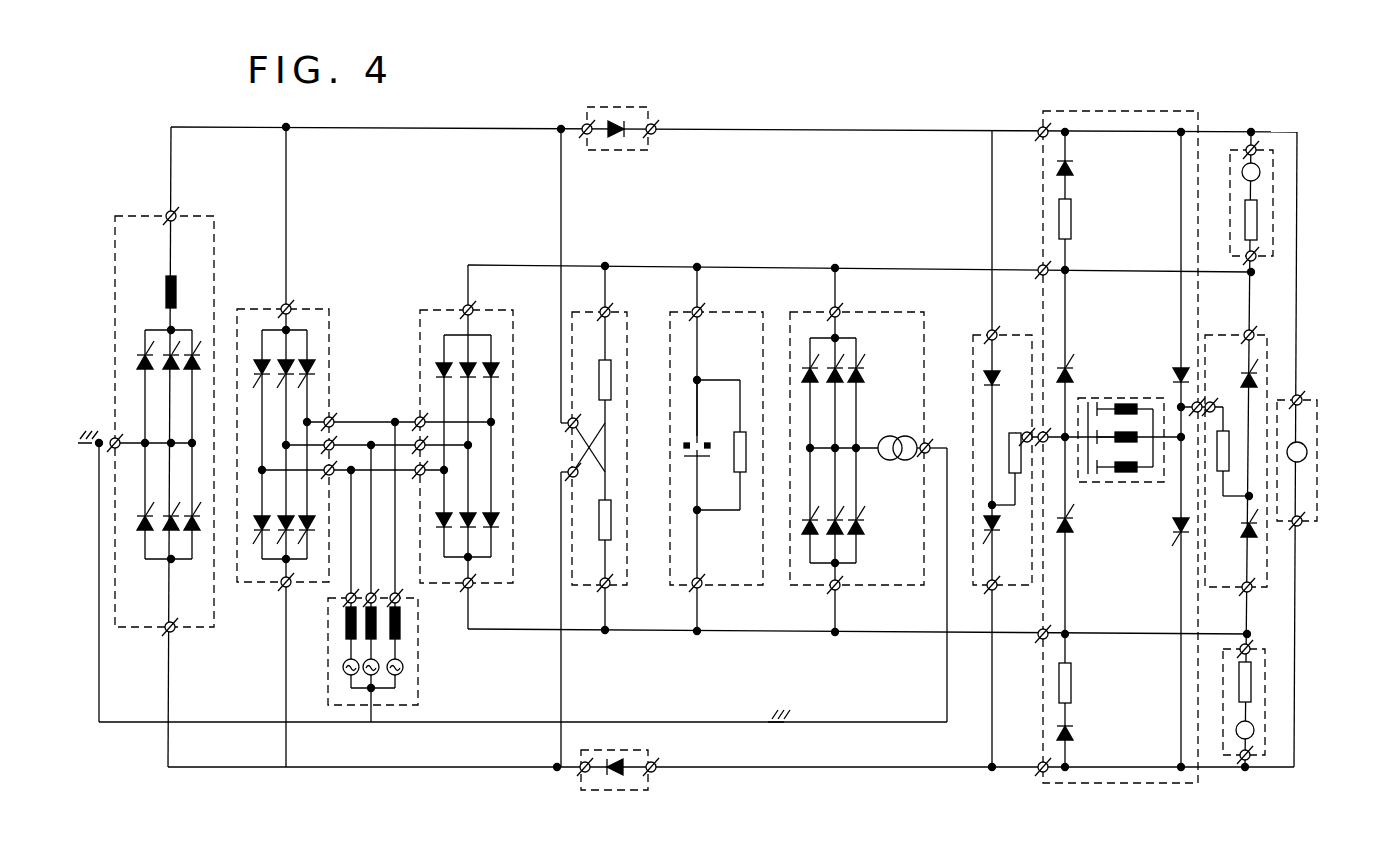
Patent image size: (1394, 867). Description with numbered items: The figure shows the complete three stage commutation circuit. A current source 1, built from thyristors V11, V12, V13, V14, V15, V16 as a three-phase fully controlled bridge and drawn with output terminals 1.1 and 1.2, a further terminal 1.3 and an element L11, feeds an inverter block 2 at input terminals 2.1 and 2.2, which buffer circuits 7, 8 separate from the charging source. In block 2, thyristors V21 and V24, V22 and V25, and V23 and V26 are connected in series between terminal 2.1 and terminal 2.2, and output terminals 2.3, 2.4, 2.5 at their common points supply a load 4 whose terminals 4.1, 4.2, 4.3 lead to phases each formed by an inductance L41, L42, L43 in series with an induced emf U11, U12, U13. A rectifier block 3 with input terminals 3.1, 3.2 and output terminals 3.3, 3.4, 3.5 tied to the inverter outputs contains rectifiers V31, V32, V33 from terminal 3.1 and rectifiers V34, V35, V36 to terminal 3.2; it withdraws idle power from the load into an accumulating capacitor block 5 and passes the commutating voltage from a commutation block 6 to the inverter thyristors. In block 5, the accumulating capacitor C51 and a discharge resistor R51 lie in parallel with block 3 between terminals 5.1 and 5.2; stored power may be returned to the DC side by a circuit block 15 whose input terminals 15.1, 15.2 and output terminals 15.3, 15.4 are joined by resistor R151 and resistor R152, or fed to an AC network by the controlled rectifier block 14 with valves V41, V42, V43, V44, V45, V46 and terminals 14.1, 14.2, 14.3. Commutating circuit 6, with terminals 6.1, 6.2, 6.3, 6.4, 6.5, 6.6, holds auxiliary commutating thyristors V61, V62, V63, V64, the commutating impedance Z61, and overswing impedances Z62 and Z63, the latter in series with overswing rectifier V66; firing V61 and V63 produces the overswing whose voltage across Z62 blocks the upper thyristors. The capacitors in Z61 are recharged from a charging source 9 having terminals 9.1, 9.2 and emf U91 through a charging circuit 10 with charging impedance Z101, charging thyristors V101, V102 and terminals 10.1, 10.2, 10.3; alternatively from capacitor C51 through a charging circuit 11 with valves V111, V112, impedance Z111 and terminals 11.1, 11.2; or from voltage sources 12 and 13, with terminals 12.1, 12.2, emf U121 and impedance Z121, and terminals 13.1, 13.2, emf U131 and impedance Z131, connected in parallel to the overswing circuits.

The thyristor bridge unit 1 is at (136, 245).
The terminal 1.1 is at (185, 225).
The terminal 1.2 is at (153, 634).
The terminal 1.3 is at (128, 454).
The inductor L11 is at (170, 279).
The thyristor V11 is at (138, 349).
The thyristor V12 is at (170, 374).
The thyristor V13 is at (190, 382).
The thyristor V14 is at (145, 565).
The thyristor V15 is at (170, 563).
The thyristor V16 is at (192, 560).
The thyristor bridge unit 2 is at (266, 308).
The terminal 2.1 is at (300, 301).
The terminal 2.2 is at (271, 579).
The terminal 2.3 is at (330, 444).
The terminal 2.4 is at (330, 420).
The terminal 2.5 is at (330, 468).
The thyristor V21 is at (256, 348).
The thyristor V22 is at (290, 350).
The thyristor V23 is at (314, 352).
The thyristor V24 is at (252, 548).
The thyristor V25 is at (290, 556).
The thyristor V26 is at (310, 557).
The diode bridge unit 3 is at (442, 308).
The terminal 3.1 is at (482, 301).
The terminal 3.2 is at (486, 580).
The terminal 3.3 is at (434, 439).
The terminal 3.4 is at (436, 429).
The terminal 3.5 is at (430, 458).
The diode V31 is at (442, 349).
The diode V32 is at (448, 358).
The diode V33 is at (497, 354).
The diode V34 is at (449, 503).
The diode V35 is at (471, 511).
The diode V36 is at (501, 513).
The three-phase source unit 4 is at (369, 583).
The terminal 4.1 is at (355, 596).
The terminal 4.2 is at (375, 596).
The terminal 4.3 is at (396, 596).
The inductor L41 is at (346, 638).
The inductor L42 is at (366, 640).
The inductor L43 is at (388, 645).
The AC voltage source U11 is at (346, 678).
The AC voltage source U12 is at (376, 676).
The AC voltage source U13 is at (402, 675).
The resistor unit 15 is at (604, 317).
The terminal 15.1 is at (623, 302).
The terminal 15.2 is at (623, 590).
The terminal 15.3 is at (586, 424).
The terminal 15.4 is at (582, 478).
The resistor R151 is at (615, 381).
The resistor R152 is at (595, 544).
The RC unit 5 is at (692, 317).
The terminal 5.1 is at (713, 302).
The terminal 5.2 is at (715, 580).
The capacitor C51 is at (704, 438).
The resistor R51 is at (736, 482).
The thyristor bridge unit 14 is at (810, 316).
The terminal 14.1 is at (854, 302).
The terminal 14.2 is at (853, 595).
The terminal with transformer 14.3 is at (882, 440).
The thyristor V41 is at (830, 380).
The thyristor V42 is at (838, 396).
The thyristor V43 is at (866, 361).
The thyristor V44 is at (818, 521).
The thyristor V45 is at (842, 522).
The thyristor V46 is at (868, 528).
The diode unit 10 is at (987, 344).
The terminal 10.1 is at (1011, 327).
The terminal 10.2 is at (1009, 575).
The terminal 10.3 is at (1019, 424).
The diode V101 is at (986, 394).
The thyristor V102 is at (986, 502).
The impedance Z101 is at (1008, 476).
The control unit 6 is at (1123, 118).
The terminal 6.1 is at (1038, 130).
The terminal 6.2 is at (1028, 758).
The terminal 6.3 is at (1028, 261).
The terminal 6.4 is at (1028, 626).
The terminal 6.5 is at (1040, 392).
The terminal 6.6 is at (1203, 407).
The diode V61 is at (1191, 392).
The thyristor V62 is at (1172, 532).
The thyristor V63 is at (1067, 377).
The thyristor V64 is at (1075, 533).
The diode V66 is at (1075, 172).
The impedance network Z61 is at (1142, 398).
The impedance Z62 is at (1072, 235).
The impedance Z63 is at (1072, 690).
The voltage source unit 12 is at (1244, 152).
The terminal 12.1 is at (1254, 148).
The terminal 12.2 is at (1271, 271).
The voltage source U121 is at (1259, 174).
The impedance Z121 is at (1258, 222).
The thyristor unit 11 is at (1224, 348).
The terminal 11.1 is at (1270, 327).
The terminal 11.2 is at (1267, 596).
The thyristor V111 is at (1258, 382).
The thyristor V112 is at (1259, 541).
The impedance Z111 is at (1216, 476).
The voltage source unit 9 is at (1282, 414).
The terminal 9.1 is at (1308, 392).
The terminal 9.2 is at (1310, 529).
The voltage source U91 is at (1302, 444).
The voltage source unit 13 is at (1234, 645).
The terminal 13.1 is at (1254, 653).
The terminal 13.2 is at (1266, 769).
The voltage source U131 is at (1254, 734).
The impedance Z131 is at (1252, 687).
The diode unit 7 is at (606, 114).
The diode unit 8 is at (600, 758).